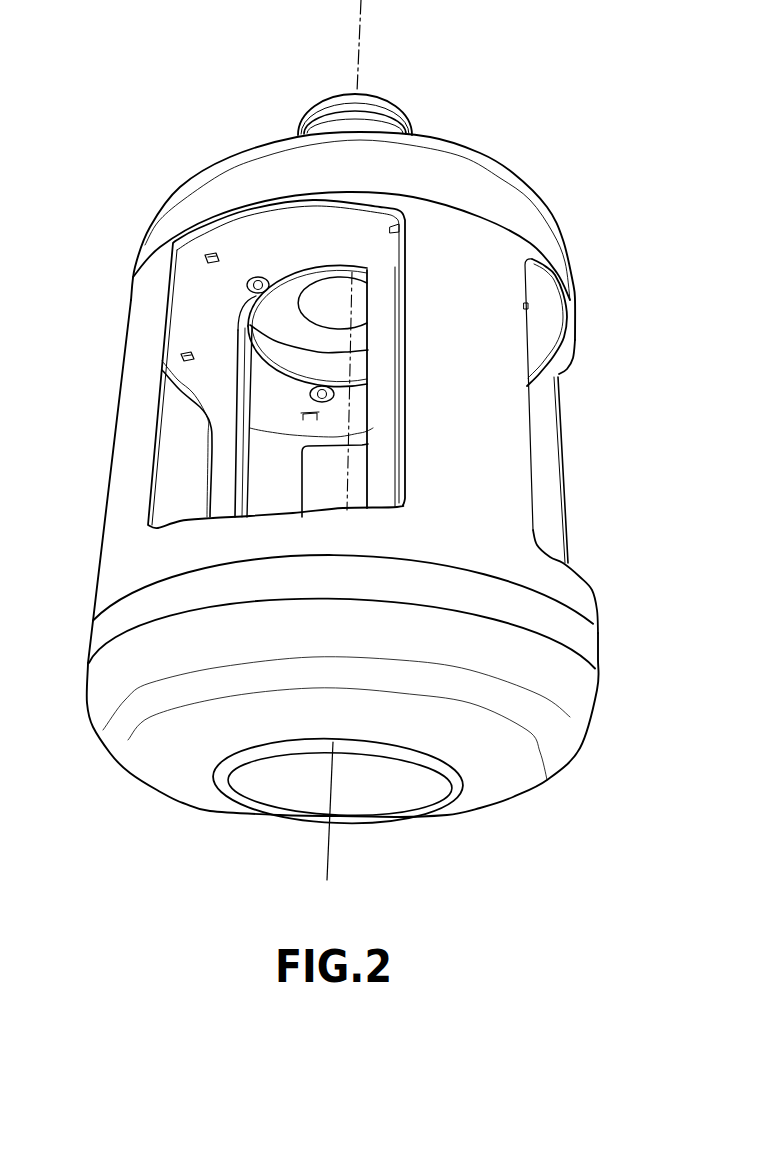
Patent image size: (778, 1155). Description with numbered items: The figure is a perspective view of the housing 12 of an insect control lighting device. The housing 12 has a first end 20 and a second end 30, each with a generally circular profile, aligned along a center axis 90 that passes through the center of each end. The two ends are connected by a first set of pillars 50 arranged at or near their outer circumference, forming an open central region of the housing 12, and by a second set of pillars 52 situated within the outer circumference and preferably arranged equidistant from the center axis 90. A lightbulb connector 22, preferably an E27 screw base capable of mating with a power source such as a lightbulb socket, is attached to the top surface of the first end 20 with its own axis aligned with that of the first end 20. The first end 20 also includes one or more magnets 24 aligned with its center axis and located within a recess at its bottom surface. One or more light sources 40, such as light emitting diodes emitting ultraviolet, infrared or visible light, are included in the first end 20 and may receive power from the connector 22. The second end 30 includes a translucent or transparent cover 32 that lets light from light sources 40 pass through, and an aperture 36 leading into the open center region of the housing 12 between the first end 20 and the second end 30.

The housing 12 is at (582, 203).
The first end 20 is at (460, 187).
The lightbulb connector 22 is at (312, 122).
The magnet 24 is at (323, 297).
The second end 30 is at (580, 645).
The cover 32 is at (575, 710).
The aperture 36 is at (253, 757).
The light source 40 is at (205, 257).
The first set of pillars 50 is at (503, 483).
The second set of pillars 52 is at (373, 425).
The center axis 90 is at (333, 777).